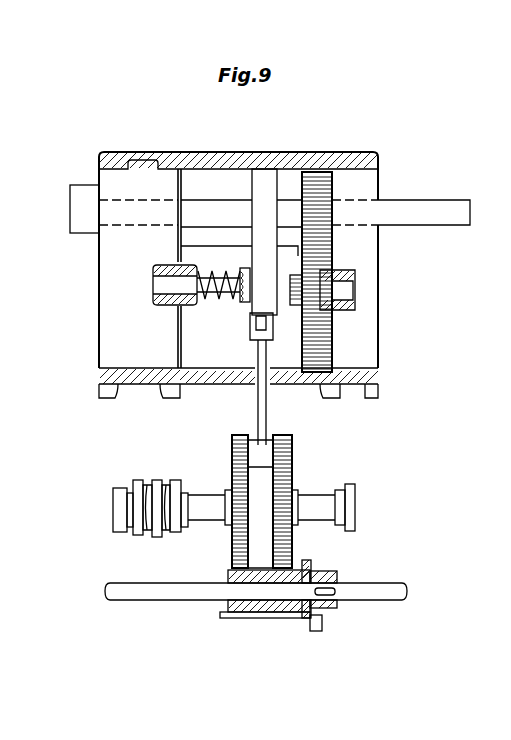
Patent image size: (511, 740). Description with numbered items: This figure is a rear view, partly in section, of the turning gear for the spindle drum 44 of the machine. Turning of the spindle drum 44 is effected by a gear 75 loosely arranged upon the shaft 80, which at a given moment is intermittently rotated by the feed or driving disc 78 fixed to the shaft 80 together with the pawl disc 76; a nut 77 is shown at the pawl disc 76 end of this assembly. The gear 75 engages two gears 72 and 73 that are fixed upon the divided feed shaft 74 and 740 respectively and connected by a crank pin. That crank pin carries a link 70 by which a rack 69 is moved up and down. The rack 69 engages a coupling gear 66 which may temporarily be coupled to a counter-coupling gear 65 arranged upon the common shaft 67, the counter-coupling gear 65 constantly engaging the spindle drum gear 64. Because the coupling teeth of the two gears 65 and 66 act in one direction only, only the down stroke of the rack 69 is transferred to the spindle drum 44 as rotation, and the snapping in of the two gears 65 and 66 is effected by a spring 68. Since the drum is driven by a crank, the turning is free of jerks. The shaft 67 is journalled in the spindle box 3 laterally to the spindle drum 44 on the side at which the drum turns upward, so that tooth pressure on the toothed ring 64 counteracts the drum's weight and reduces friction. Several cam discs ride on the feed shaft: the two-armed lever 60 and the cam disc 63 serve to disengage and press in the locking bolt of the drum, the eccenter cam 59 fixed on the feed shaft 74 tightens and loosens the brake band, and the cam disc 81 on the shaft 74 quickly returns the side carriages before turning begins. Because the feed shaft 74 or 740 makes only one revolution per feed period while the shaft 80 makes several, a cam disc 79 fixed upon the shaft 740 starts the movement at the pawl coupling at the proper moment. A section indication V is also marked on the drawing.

The spindle box 3 is at (100, 378).
The spindle drum 44 is at (105, 262).
The eccenter cam 59 is at (174, 532).
The two-armed lever 60 is at (157, 490).
The cam disc 63 is at (138, 532).
The spindle drum gear 64 is at (318, 172).
The counter-coupling gear 65 is at (335, 310).
The coupling gear 66 is at (244, 303).
The shaft 67 is at (153, 285).
The spring 68 is at (220, 302).
The rack 69 is at (266, 170).
The link 70 is at (258, 402).
The gear 72 is at (292, 472).
The gear 73 is at (236, 470).
The feed shaft 74 is at (206, 516).
The gear 75 is at (258, 618).
The pawl disc 76 is at (306, 625).
The nut 77 is at (322, 628).
The driving disc 78 is at (335, 576).
The cam disc 79 is at (353, 500).
The shaft 80 is at (396, 600).
The cam disc 81 is at (113, 493).
The feed shaft 740 is at (320, 512).
The section bracket V is at (78, 207).